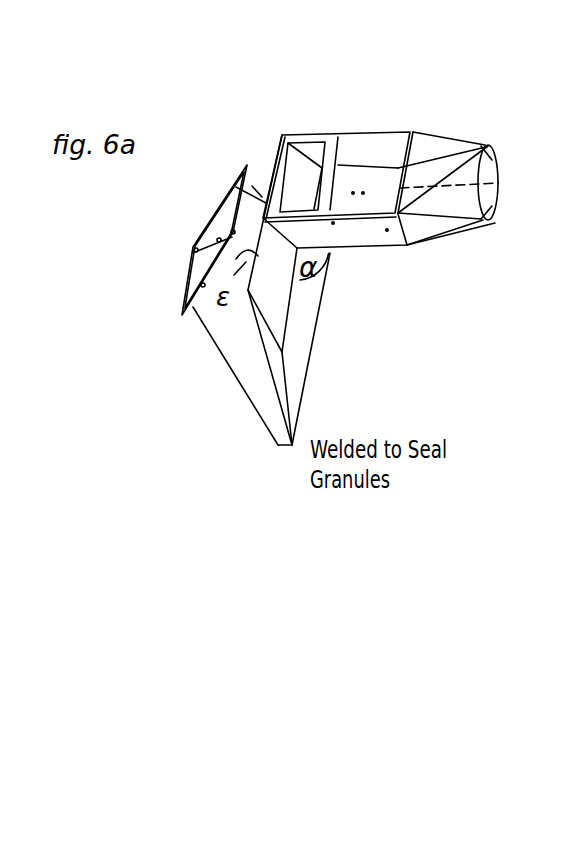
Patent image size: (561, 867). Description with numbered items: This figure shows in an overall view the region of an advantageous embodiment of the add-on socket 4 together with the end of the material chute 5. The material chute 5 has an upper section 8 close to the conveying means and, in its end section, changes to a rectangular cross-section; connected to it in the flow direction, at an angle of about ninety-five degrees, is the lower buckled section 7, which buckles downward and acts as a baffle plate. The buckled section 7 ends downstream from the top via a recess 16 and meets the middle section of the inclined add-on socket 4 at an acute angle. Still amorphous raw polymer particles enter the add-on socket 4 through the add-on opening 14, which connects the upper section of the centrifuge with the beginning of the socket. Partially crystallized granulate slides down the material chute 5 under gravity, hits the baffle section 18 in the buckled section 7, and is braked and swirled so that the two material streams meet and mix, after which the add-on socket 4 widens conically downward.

The add-on socket 4 is at (250, 338).
The material chute 5 is at (353, 235).
The buckled section 7 is at (270, 276).
The upper section 8 is at (493, 221).
The add-on opening 14 is at (193, 250).
The recess 16 is at (267, 348).
The baffle section 18 is at (261, 191).